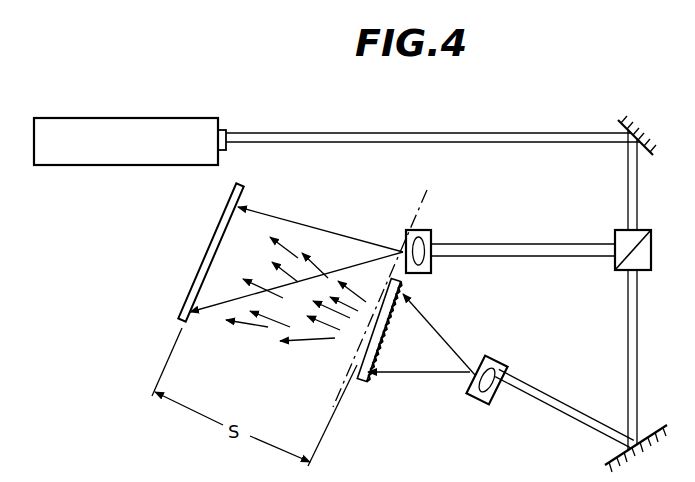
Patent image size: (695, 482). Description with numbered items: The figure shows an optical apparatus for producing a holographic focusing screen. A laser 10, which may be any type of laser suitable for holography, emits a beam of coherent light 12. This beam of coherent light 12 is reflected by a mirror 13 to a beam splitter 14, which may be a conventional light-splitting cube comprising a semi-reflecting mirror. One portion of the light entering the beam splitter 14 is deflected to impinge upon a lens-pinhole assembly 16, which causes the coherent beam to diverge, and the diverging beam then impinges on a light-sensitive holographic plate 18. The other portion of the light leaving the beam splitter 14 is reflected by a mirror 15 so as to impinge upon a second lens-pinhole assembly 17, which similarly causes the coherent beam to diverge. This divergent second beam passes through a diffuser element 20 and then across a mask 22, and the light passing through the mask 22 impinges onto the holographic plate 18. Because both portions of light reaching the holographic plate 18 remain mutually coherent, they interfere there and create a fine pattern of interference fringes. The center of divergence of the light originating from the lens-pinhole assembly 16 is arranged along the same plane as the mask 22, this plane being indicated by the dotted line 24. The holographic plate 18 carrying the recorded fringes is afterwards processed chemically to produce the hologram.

The laser 10 is at (186, 118).
The beam of coherent light 12 is at (460, 132).
The mirror 13 is at (614, 123).
The beam splitter 14 is at (638, 232).
The mirror 15 is at (602, 453).
The lens-pinhole assembly 16 is at (431, 235).
The second lens-pinhole assembly 17 is at (491, 402).
The holographic plate 18 is at (180, 314).
The diffuser element 20 is at (364, 381).
The mask 22 is at (359, 371).
The dotted line 24 is at (430, 197).